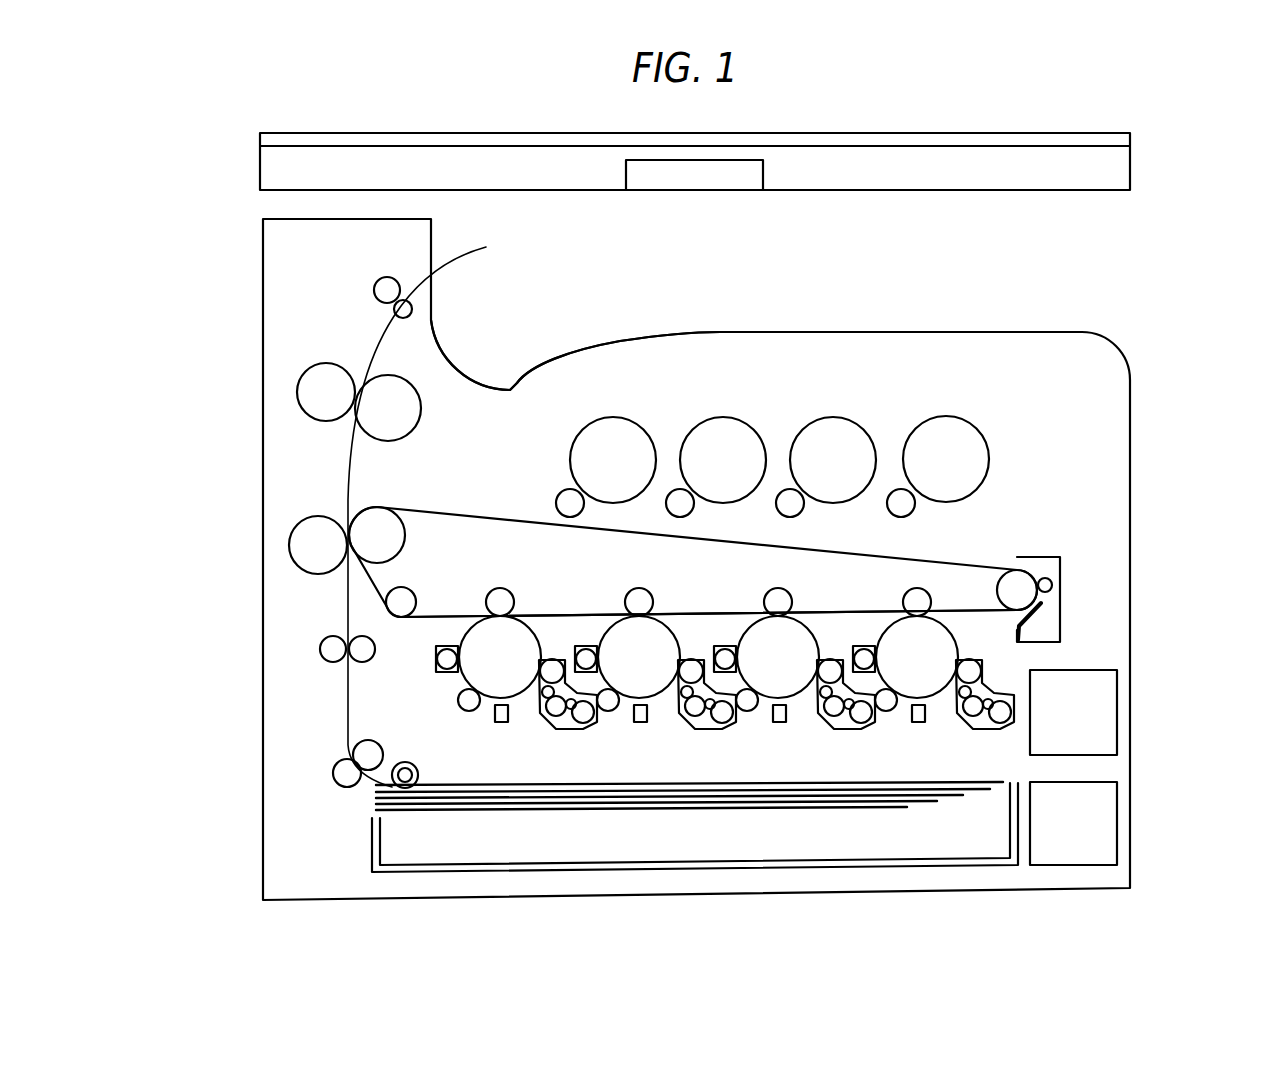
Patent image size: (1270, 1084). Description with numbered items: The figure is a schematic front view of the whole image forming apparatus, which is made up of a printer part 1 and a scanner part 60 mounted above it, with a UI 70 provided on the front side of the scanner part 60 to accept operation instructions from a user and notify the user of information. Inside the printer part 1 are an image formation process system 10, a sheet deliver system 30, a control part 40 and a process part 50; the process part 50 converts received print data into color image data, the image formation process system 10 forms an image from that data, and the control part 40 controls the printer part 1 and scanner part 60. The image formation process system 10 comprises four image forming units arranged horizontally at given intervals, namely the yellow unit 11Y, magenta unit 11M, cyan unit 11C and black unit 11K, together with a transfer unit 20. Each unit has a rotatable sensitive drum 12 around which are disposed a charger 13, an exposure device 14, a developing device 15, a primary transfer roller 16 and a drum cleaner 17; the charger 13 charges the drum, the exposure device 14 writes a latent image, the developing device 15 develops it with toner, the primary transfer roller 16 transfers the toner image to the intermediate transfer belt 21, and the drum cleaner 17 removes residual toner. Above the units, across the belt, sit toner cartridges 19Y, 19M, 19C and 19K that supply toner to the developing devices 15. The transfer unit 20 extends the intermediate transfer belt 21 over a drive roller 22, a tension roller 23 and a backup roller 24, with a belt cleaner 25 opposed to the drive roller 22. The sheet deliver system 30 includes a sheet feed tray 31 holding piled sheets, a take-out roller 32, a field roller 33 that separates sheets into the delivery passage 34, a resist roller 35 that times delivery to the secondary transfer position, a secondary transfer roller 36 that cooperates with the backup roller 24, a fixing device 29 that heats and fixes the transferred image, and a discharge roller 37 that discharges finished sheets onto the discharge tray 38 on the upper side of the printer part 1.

The printer part 1 is at (1134, 328).
The image formation process system 10 is at (733, 537).
The black image forming unit 11K is at (534, 735).
The cyan image forming unit 11C is at (673, 735).
The magenta image forming unit 11M is at (812, 735).
The yellow image forming unit 11Y is at (910, 655).
The sensitive drum 12 is at (905, 642).
The charger 13 is at (887, 711).
The exposure device 14 is at (918, 723).
The developing device 15 is at (972, 664).
The primary transfer roller 16 is at (915, 599).
The drum cleaner 17 is at (856, 647).
The black toner cartridge 19K is at (614, 440).
The cyan toner cartridge 19C is at (724, 440).
The magenta toner cartridge 19M is at (834, 440).
The yellow toner cartridge 19Y is at (947, 440).
The transfer unit 20 is at (485, 508).
The intermediate transfer belt 21 is at (572, 613).
The drive roller 22 is at (1012, 586).
The tension roller 23 is at (405, 606).
The backup roller 24 is at (385, 541).
The belt cleaner 25 is at (1068, 587).
The fixing device 29 is at (294, 385).
The sheet deliver system 30 is at (610, 565).
The sheet feed tray 31 is at (372, 843).
The take-out roller 32 is at (410, 771).
The field roller 33 is at (343, 778).
The delivery passage 34 is at (347, 707).
The resist roller 35 is at (332, 651).
The secondary transfer roller 36 is at (318, 549).
The discharge roller 37 is at (386, 288).
The discharge tray 38 is at (712, 331).
The control part 40 is at (1117, 820).
The process part 50 is at (1117, 705).
The scanner part 60 is at (1142, 165).
The UI 70 is at (655, 175).